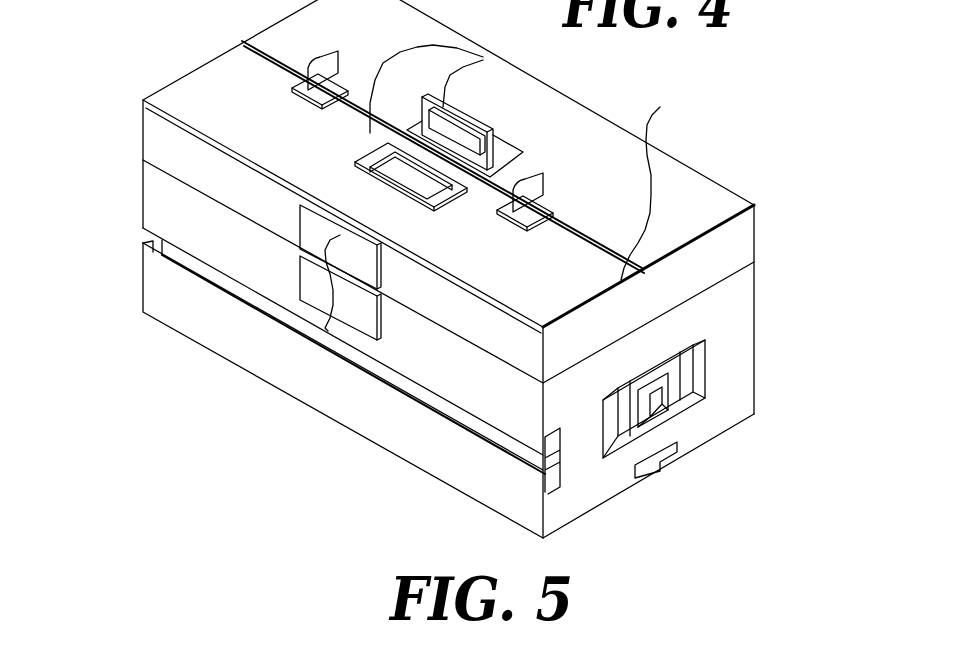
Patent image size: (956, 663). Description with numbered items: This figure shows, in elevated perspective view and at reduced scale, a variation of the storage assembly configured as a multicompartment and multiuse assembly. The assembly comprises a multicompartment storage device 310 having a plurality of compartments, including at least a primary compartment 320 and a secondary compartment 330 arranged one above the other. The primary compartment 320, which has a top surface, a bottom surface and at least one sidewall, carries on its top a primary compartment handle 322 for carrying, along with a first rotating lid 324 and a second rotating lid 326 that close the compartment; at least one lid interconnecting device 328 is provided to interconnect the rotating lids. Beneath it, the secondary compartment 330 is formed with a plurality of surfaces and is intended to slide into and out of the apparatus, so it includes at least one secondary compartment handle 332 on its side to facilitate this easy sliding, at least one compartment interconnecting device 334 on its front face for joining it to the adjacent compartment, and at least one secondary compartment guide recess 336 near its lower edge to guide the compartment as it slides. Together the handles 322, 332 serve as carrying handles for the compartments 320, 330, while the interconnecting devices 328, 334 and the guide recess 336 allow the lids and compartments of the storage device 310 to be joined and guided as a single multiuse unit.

The multicompartment storage device 310 is at (143, 178).
The primary compartment 320 is at (756, 222).
The primary compartment handle 322 is at (483, 57).
The first rotating lid 324 is at (717, 222).
The second rotating lid 326 is at (660, 107).
The lid interconnecting device 328 is at (320, 63).
The secondary compartment 330 is at (756, 380).
The secondary compartment handle 332 is at (680, 369).
The compartment interconnecting device 334 is at (327, 278).
The secondary compartment guide recess 336 is at (550, 466).